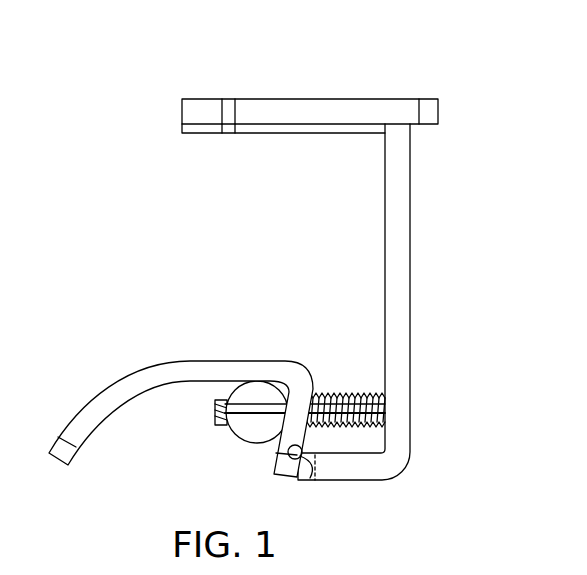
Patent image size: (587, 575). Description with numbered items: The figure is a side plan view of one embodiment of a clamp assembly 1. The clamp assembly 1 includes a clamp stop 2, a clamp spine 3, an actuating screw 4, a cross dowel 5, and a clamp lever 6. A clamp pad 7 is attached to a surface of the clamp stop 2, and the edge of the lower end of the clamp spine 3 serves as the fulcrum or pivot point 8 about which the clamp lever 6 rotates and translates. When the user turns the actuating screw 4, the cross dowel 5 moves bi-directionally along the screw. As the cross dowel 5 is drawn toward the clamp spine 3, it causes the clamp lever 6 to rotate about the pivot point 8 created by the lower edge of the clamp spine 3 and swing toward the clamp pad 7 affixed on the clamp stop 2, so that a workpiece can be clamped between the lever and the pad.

The clamp assembly 1 is at (138, 74).
The clamp stop 2 is at (263, 98).
The clamp spine 3 is at (411, 215).
The actuating screw 4 is at (353, 395).
The cross dowel 5 is at (253, 442).
The clamp lever 6 is at (150, 368).
The clamp pad 7 is at (205, 133).
The pivot point 8 is at (308, 480).